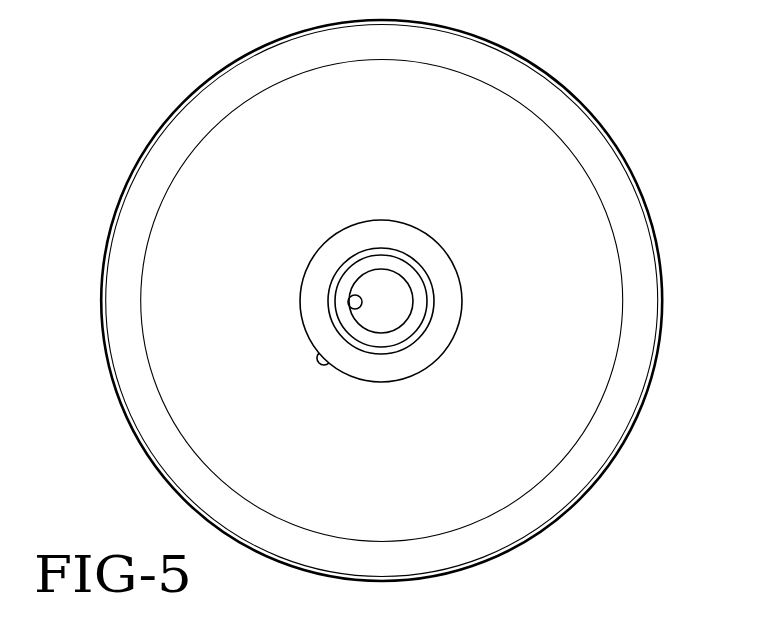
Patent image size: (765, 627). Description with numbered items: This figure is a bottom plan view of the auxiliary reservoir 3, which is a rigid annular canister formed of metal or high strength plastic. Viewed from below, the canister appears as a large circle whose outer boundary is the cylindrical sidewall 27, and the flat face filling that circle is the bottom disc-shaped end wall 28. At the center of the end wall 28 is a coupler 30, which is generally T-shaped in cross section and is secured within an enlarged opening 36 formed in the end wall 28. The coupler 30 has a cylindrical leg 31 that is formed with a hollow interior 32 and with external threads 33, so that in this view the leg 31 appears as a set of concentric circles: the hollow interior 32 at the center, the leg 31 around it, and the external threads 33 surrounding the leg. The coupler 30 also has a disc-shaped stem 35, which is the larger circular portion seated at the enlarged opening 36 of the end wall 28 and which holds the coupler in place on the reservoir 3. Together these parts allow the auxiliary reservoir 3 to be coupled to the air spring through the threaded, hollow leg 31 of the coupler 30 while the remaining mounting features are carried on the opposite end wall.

The auxiliary reservoir 3 is at (620, 143).
The cylindrical sidewall 27 is at (643, 196).
The bottom end wall 28 is at (587, 250).
The coupler 30 is at (437, 253).
The cylindrical leg 31 is at (418, 302).
The hollow interior 32 is at (350, 295).
The external threads 33 is at (340, 265).
The disc-shaped stem 35 is at (432, 342).
The enlarged opening 36 is at (325, 348).